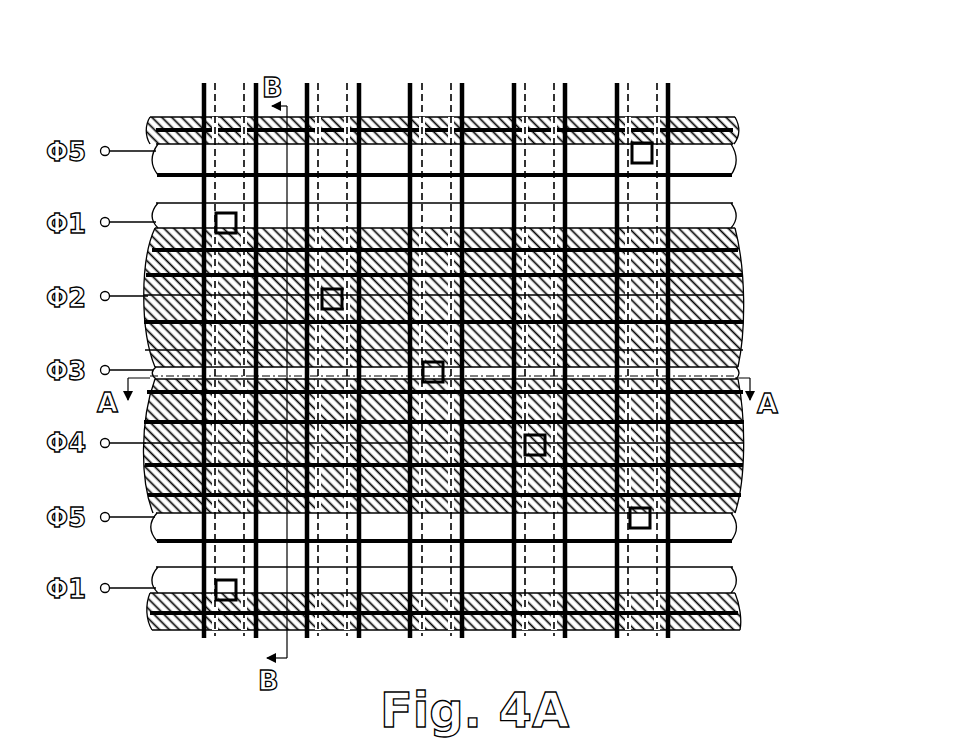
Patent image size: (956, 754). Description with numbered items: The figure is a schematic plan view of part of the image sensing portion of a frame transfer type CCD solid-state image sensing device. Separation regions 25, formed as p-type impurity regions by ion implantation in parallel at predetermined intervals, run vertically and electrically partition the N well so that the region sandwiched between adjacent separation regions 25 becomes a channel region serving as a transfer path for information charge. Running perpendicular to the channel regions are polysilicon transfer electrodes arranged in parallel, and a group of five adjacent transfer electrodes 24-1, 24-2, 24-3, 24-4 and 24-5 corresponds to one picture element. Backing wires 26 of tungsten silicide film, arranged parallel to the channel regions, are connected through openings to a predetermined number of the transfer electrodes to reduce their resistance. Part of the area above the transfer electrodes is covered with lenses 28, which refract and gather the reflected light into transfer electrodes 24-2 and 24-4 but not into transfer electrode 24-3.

The transfer electrode 24-1 is at (733, 226).
The transfer electrode 24-2 is at (738, 299).
The transfer electrode 24-3 is at (733, 372).
The transfer electrode 24-4 is at (738, 446).
The transfer electrode 24-5 is at (733, 152).
The separation region 25 is at (228, 85).
The backing wire 26 is at (212, 84).
The lens 28 is at (740, 338).